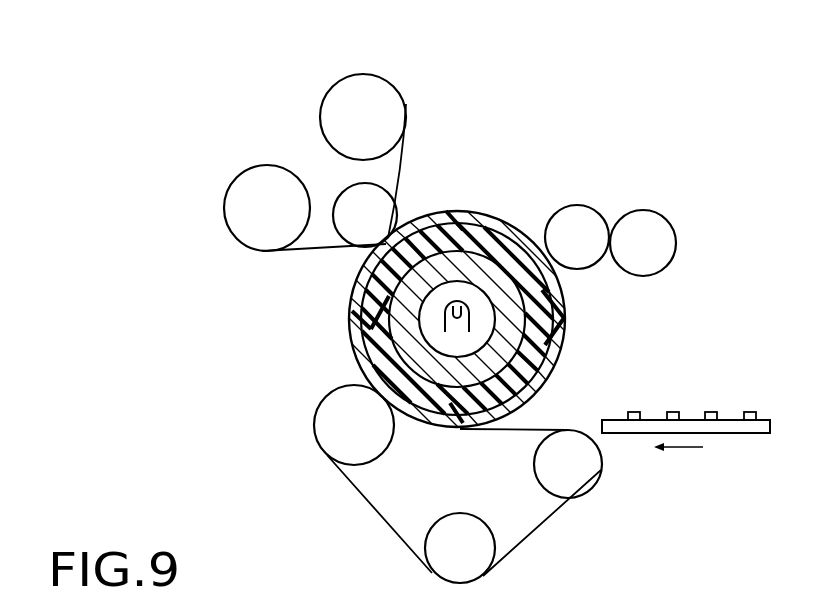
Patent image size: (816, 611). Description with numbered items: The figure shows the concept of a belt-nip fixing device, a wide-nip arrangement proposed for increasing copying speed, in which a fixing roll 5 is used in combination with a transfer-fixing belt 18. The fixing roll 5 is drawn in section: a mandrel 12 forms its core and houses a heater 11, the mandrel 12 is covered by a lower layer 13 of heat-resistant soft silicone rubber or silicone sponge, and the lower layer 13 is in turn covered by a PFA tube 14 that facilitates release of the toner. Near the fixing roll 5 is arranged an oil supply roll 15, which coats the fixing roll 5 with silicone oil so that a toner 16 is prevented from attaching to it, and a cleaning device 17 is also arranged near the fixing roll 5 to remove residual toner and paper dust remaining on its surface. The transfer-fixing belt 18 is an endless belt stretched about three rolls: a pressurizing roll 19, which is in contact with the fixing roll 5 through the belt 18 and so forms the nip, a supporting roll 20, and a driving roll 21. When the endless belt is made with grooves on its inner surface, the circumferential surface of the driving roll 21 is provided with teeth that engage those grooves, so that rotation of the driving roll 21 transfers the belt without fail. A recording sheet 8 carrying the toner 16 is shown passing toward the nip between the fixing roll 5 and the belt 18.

The fixing roll 5 is at (455, 277).
The recording sheet 8 is at (686, 418).
The heater 11 is at (493, 333).
The mandrel 12 is at (512, 312).
The lower layer 13 is at (372, 327).
The PFA tube 14 is at (358, 305).
The oil supply roll 15 is at (643, 225).
The toner 16 is at (752, 413).
The cleaning device 17 is at (418, 97).
The transfer-fixing belt 18 is at (537, 536).
The pressurizing roll 19 is at (333, 428).
The supporting roll 20 is at (463, 530).
The driving roll 21 is at (585, 472).